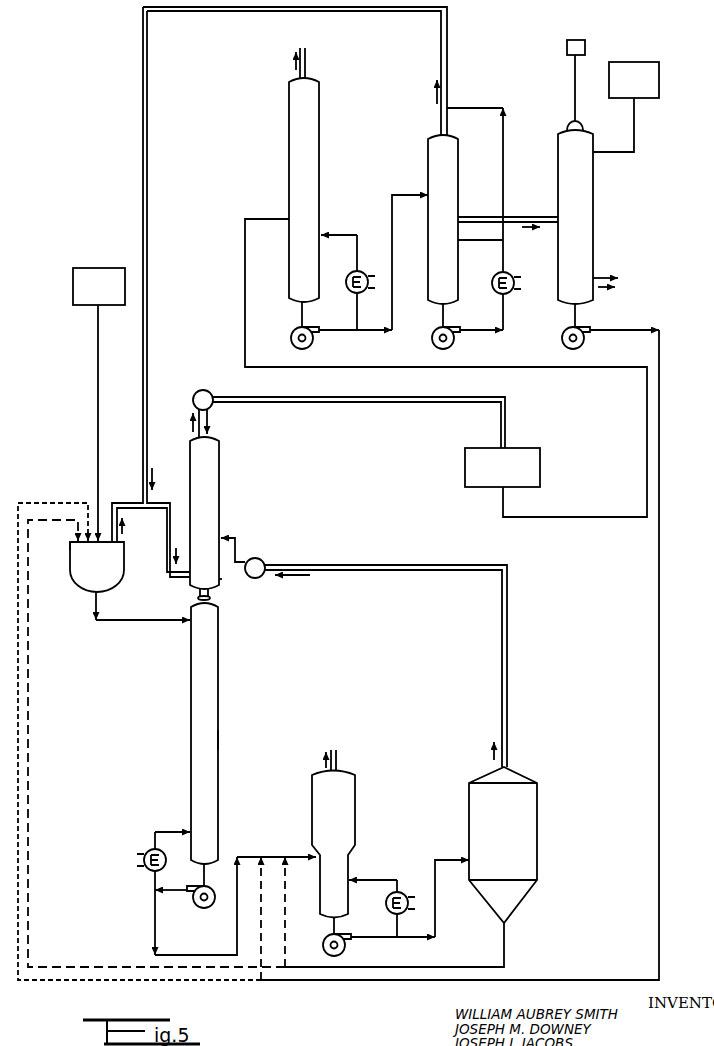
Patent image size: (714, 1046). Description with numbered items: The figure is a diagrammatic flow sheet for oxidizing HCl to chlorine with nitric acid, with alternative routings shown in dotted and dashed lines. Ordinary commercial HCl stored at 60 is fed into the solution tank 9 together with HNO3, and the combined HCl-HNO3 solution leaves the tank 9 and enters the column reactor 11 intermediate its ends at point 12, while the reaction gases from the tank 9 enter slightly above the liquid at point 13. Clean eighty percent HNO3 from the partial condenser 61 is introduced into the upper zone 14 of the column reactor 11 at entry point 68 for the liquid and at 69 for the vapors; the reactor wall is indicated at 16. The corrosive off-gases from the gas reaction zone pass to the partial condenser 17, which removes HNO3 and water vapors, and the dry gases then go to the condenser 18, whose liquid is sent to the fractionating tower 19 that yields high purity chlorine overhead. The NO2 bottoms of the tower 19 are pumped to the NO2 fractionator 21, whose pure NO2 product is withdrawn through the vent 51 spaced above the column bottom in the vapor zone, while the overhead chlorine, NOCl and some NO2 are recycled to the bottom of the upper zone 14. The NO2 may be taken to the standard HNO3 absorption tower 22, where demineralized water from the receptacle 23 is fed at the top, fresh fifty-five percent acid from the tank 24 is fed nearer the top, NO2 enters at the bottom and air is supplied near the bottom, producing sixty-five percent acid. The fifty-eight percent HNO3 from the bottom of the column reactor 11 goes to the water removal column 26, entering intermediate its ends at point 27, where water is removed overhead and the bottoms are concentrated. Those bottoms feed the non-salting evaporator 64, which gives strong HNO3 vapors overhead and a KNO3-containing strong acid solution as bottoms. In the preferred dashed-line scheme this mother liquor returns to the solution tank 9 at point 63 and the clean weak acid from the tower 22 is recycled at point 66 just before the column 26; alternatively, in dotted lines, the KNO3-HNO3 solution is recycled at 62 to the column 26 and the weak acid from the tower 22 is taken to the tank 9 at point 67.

The solution tank 9 is at (101, 579).
The column reactor 11 is at (188, 718).
The feed point 12 is at (190, 624).
The reaction gas entry point 13 is at (190, 586).
The upper zone 14 is at (214, 488).
The reactor column wall 16 is at (219, 741).
The partial condenser 17 is at (208, 392).
The condenser 18 is at (512, 476).
The fractionating tower 19 is at (313, 173).
The NO2 fractionator 21 is at (453, 193).
The HNO3 absorption tower 22 is at (586, 193).
The receptacle 23 is at (586, 41).
The tank 24 is at (660, 62).
The water removal column 26 is at (343, 825).
The acid entry point 27 is at (316, 856).
The vent 51 is at (460, 220).
The HCl storage 60 is at (110, 268).
The partial condenser 61 is at (263, 560).
The recycle point 62 is at (283, 852).
The entry point 63 is at (82, 544).
The non-salting evaporator 64 is at (512, 830).
The recycle point 66 is at (260, 855).
The entry point 67 is at (75, 542).
The liquid entry point 68 is at (232, 542).
The vapor entry point 69 is at (220, 579).